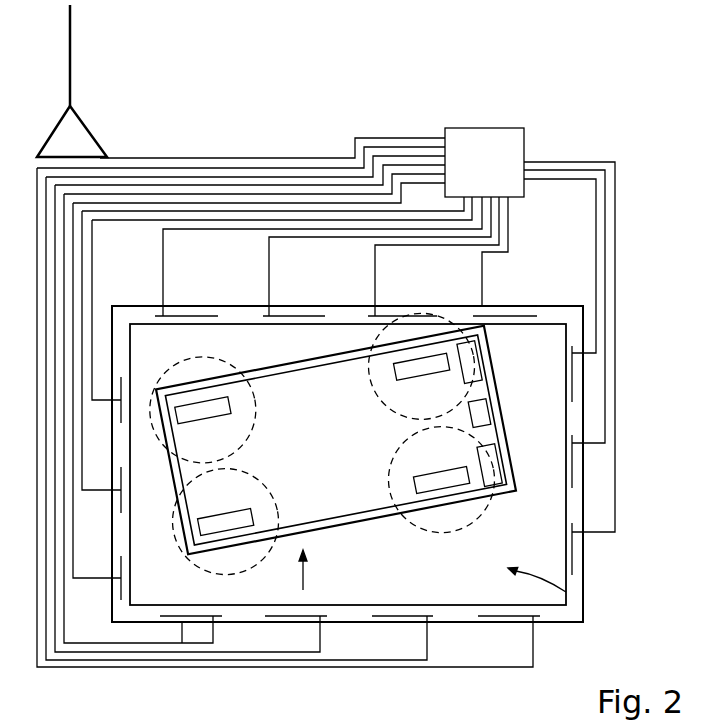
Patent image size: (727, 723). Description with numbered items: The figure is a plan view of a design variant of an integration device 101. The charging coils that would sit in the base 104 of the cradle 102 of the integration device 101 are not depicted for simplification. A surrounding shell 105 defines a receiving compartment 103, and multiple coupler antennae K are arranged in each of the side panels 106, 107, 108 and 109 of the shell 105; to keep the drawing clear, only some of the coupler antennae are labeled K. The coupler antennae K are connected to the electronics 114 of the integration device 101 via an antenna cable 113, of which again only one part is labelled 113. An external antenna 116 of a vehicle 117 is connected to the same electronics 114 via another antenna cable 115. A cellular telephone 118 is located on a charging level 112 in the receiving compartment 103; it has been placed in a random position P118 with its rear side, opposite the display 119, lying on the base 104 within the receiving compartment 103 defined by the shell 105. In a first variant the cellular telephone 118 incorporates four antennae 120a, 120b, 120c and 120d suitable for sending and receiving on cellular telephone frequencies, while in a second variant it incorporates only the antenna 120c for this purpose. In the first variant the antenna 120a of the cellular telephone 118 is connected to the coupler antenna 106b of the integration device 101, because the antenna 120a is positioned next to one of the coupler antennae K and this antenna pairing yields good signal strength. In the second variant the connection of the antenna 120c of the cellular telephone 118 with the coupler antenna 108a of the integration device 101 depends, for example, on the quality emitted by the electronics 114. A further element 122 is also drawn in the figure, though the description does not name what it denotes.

The integration device 101 is at (546, 96).
The cradle 102 is at (584, 640).
The receiving compartment 103 is at (584, 614).
The base 104 is at (583, 595).
The shell 105 is at (562, 612).
The side panel 106 is at (553, 305).
The coupler antenna 106b is at (379, 300).
The side panel 107 is at (118, 322).
The side panel 108 is at (140, 617).
The coupler antenna 108a is at (183, 632).
The side panel 109 is at (577, 583).
The charging level 112 is at (352, 592).
The antenna cable 113 is at (616, 203).
The electronics 114 is at (512, 148).
The antenna cable 115 is at (302, 157).
The external antenna 116 is at (87, 129).
The vehicle 117 is at (225, 124).
The cellular telephone 118 is at (337, 515).
The display 119 is at (358, 493).
The antenna 120a is at (395, 371).
The antenna 120b is at (231, 405).
The antenna 120c is at (253, 517).
The antenna 120d is at (417, 482).
The connection 122 is at (539, 715).
The coupler antennae K is at (582, 371).
The random position P118 is at (303, 590).